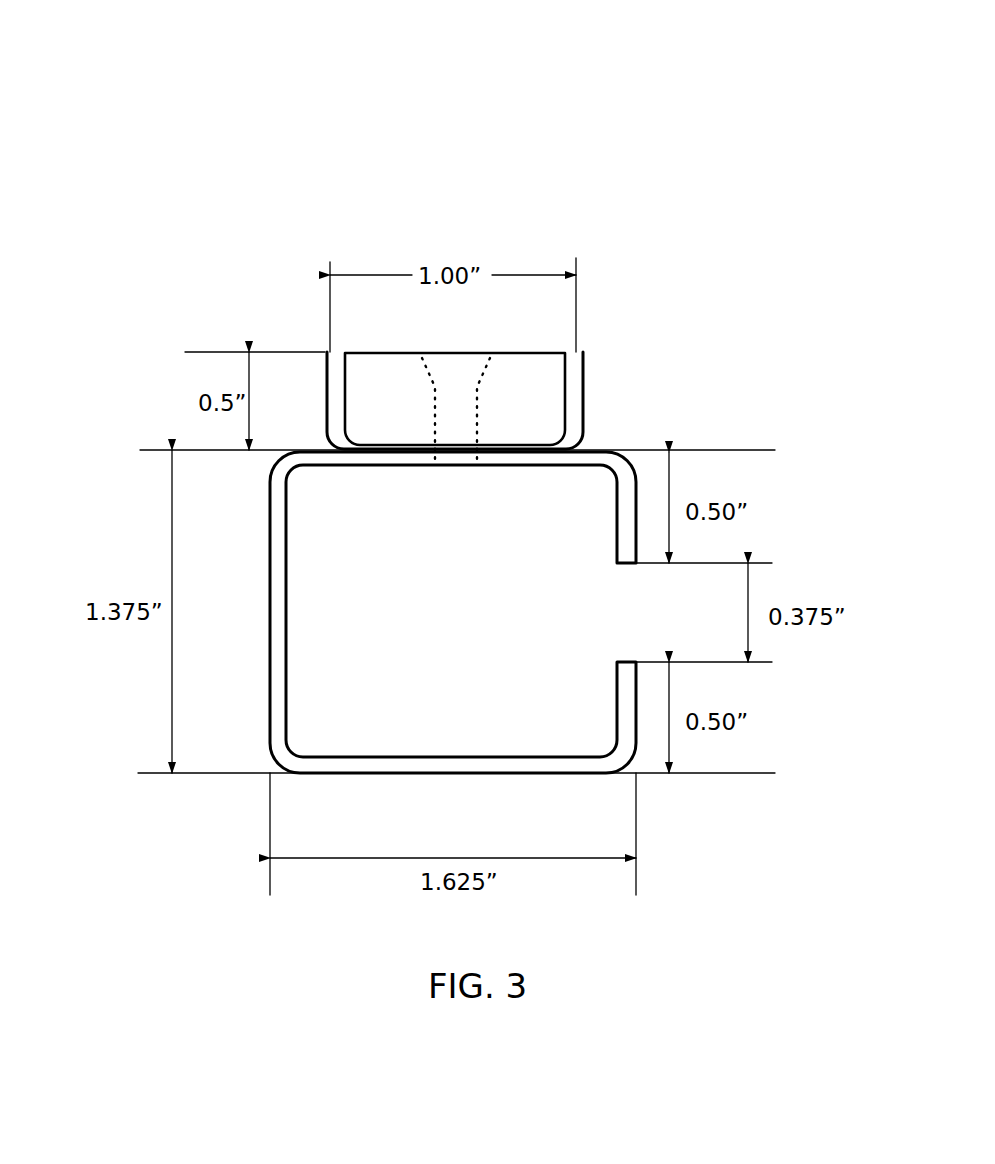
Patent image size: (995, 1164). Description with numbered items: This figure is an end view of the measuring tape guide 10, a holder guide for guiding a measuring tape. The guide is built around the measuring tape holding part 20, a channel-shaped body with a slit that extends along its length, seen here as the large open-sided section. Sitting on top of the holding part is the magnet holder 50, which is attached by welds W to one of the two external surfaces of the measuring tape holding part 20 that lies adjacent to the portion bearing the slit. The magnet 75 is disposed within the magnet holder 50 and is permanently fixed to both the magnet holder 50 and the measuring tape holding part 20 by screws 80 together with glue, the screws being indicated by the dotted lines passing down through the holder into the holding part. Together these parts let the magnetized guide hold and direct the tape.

The measuring tape guide 10 is at (483, 183).
The measuring tape holding part 20 is at (270, 745).
The magnet holder 50 is at (322, 392).
The magnet 75 is at (547, 365).
The screws 80 is at (477, 352).
The welds W is at (580, 447).